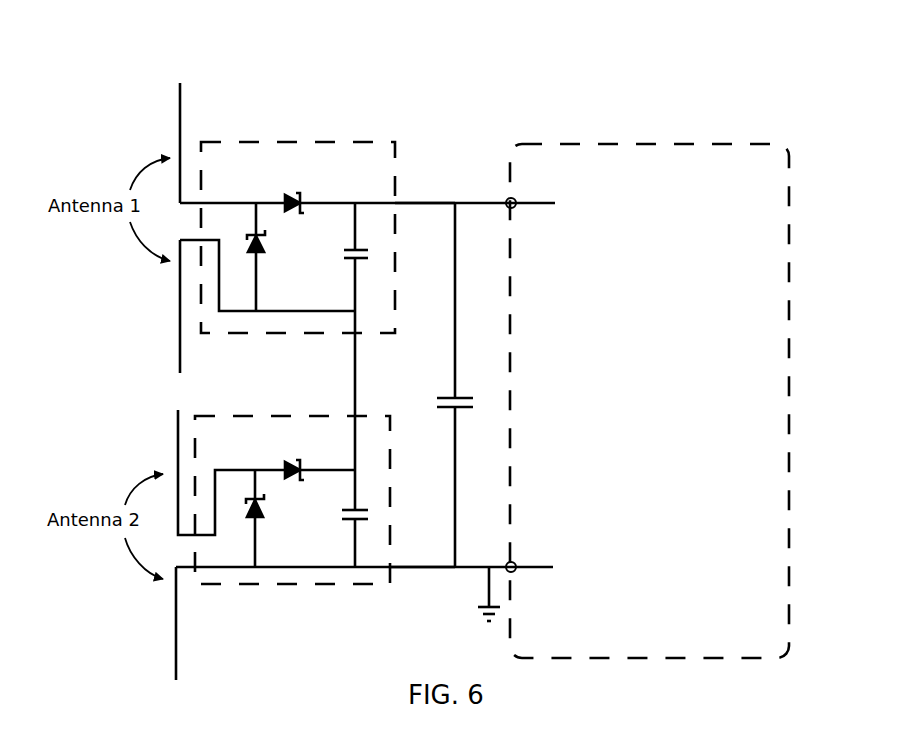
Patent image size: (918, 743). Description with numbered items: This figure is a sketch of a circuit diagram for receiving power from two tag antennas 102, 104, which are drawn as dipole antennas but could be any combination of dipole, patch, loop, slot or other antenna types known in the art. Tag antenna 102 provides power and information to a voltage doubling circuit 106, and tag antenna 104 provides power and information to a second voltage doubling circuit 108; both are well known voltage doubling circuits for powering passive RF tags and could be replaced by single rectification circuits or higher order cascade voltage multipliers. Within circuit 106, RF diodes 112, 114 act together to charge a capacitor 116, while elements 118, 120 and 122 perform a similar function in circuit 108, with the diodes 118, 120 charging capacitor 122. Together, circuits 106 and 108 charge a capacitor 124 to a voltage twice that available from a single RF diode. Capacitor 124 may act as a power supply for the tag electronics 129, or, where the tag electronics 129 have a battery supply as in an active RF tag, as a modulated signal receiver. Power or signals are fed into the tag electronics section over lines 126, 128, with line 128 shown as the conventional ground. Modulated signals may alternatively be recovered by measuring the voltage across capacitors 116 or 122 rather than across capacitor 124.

The tag antenna 102 is at (183, 112).
The tag antenna 104 is at (178, 444).
The voltage doubling circuit 106 is at (323, 140).
The voltage doubling circuit 108 is at (283, 590).
The RF diode 112 is at (265, 242).
The RF diode 114 is at (291, 192).
The capacitor 116 is at (349, 262).
The RF diode 118 is at (264, 504).
The RF diode 120 is at (285, 460).
The capacitor 122 is at (350, 507).
The capacitor 124 is at (445, 409).
The line 126 is at (418, 203).
The line 128 is at (418, 571).
The tag electronics 129 is at (790, 570).